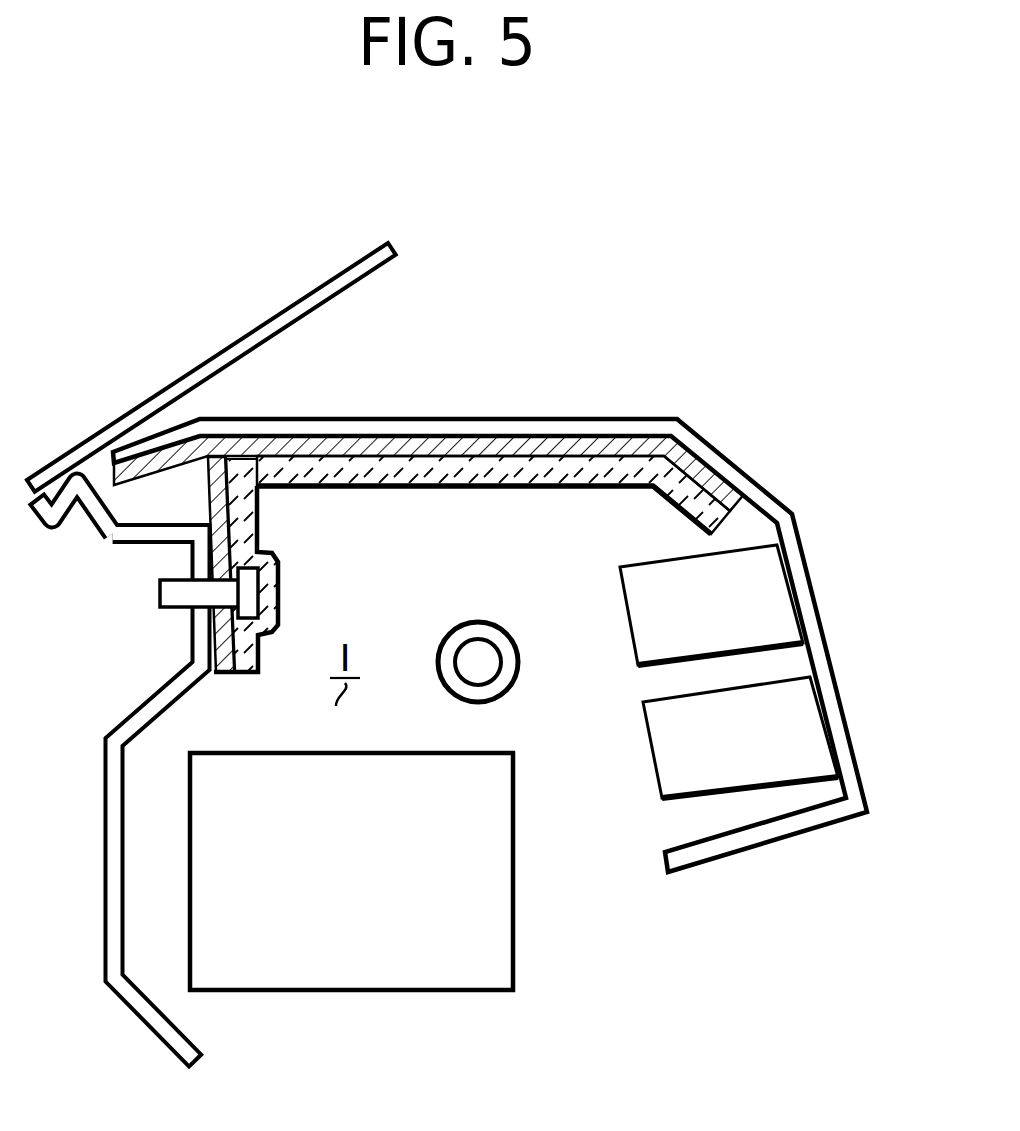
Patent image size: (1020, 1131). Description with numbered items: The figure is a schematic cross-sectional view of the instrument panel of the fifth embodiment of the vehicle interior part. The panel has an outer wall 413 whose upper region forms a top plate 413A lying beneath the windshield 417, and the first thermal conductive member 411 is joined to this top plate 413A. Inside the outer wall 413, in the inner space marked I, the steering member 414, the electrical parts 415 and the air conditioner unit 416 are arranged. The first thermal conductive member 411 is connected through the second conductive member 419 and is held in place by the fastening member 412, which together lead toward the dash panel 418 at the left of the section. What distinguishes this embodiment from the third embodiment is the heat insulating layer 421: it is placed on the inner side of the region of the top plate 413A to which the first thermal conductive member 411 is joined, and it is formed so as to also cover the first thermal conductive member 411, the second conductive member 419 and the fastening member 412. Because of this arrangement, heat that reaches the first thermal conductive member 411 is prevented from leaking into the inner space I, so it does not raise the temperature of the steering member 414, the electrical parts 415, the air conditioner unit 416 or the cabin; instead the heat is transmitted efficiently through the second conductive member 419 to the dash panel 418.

The first thermal conductive member 411 is at (592, 462).
The fastening member 412 is at (280, 600).
The outer wall 413 is at (763, 487).
The top plate 413A is at (481, 418).
The steering member 414 is at (505, 640).
The electrical parts 415 is at (637, 672).
The air conditioner unit 416 is at (514, 937).
The windshield 417 is at (207, 358).
The dash panel 418 is at (120, 723).
The second conductive member 419 is at (248, 508).
The heat insulating layer 421 is at (473, 488).